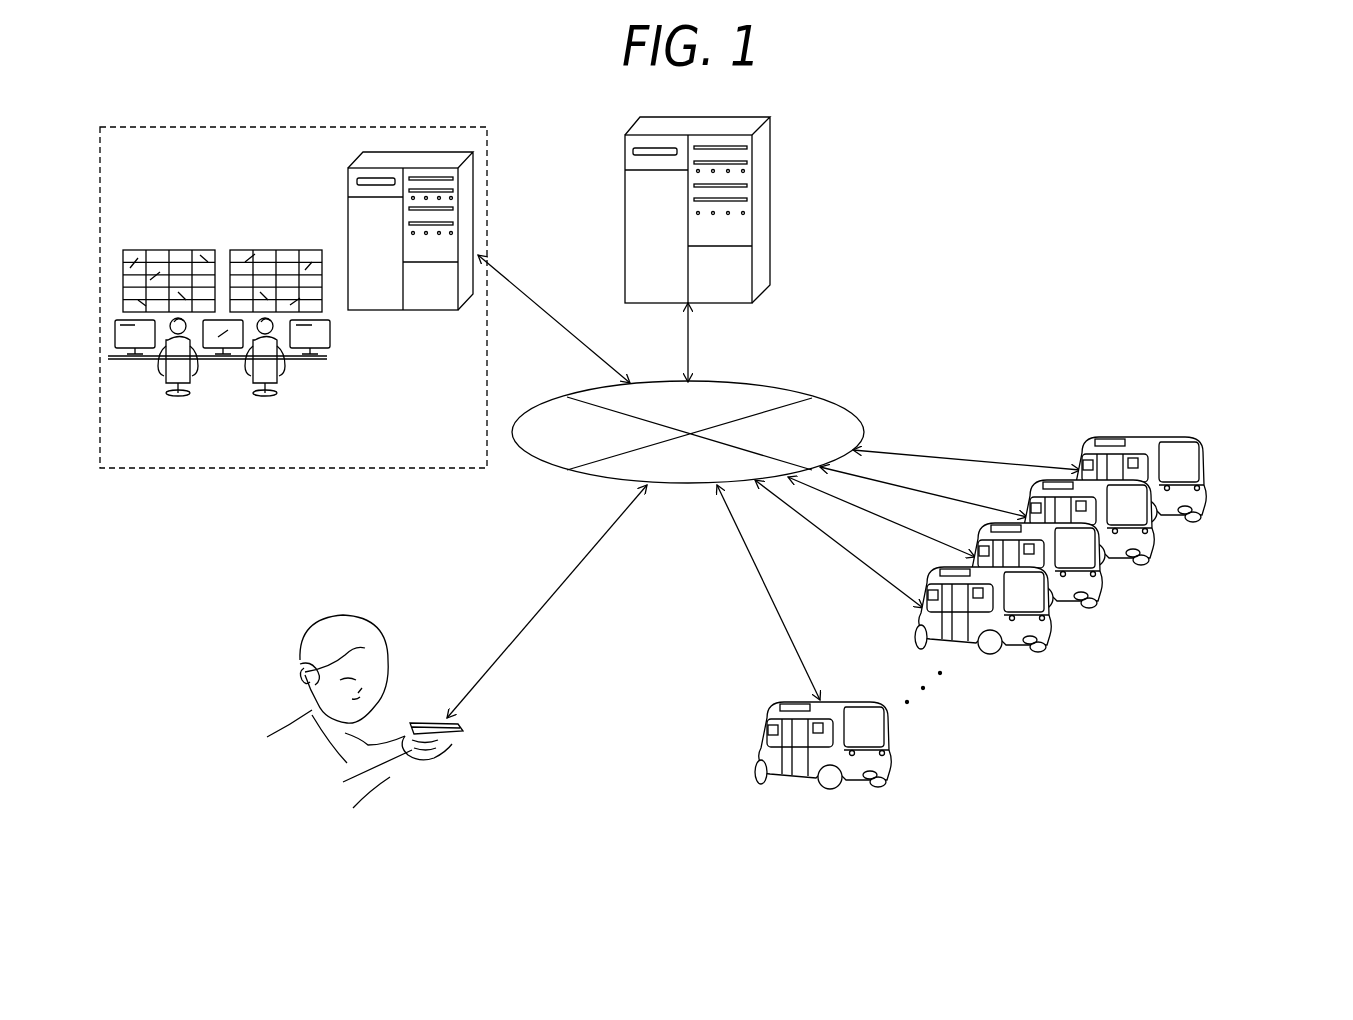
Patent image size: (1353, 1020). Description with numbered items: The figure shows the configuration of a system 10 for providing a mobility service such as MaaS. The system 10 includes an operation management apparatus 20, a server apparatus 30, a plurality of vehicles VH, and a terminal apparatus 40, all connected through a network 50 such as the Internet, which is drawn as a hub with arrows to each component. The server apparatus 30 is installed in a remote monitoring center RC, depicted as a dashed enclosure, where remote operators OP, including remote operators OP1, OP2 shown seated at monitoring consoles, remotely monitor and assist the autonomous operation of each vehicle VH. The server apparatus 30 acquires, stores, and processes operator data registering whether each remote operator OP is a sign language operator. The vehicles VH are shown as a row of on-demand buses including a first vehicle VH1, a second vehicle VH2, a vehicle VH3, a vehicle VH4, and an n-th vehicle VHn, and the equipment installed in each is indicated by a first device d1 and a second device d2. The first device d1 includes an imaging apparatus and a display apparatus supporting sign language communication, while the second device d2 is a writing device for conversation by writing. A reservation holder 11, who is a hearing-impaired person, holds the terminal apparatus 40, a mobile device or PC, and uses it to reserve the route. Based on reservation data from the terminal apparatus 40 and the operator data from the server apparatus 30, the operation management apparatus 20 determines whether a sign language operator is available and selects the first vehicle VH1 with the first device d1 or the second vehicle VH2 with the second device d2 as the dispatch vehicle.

The system 10 is at (1032, 272).
The reservation holder 11 is at (315, 630).
The operation management apparatus 20 is at (773, 197).
The server apparatus 30 is at (348, 205).
The terminal apparatus 40 is at (464, 729).
The network 50 is at (822, 396).
The remote monitoring center RC is at (272, 126).
The remote operators OP is at (224, 388).
The remote operator OP1 is at (158, 364).
The remote operator OP2 is at (286, 366).
The first device d1 is at (1088, 462).
The second device d2 is at (1136, 466).
The vehicles VH is at (993, 617).
The first vehicle VH1 is at (1215, 522).
The second vehicle VH2 is at (1160, 560).
The vehicle VH3 is at (1110, 598).
The vehicle VH4 is at (1058, 642).
The n-th vehicle VHn is at (893, 770).